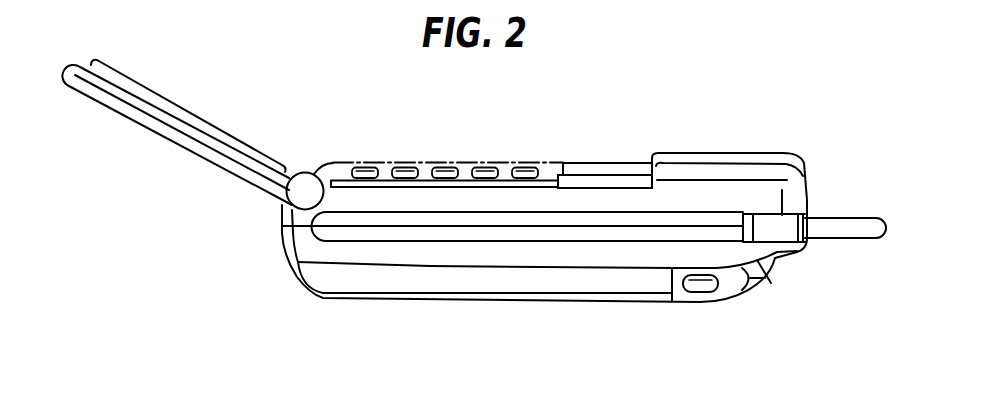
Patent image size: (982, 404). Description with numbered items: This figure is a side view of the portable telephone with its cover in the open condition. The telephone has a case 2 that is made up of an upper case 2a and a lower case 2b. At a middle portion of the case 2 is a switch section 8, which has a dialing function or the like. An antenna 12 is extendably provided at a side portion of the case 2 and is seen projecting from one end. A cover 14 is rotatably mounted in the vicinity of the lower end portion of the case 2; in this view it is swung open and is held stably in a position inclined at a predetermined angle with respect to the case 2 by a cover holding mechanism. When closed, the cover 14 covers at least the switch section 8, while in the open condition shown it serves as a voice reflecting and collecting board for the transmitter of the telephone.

The case 2 is at (653, 150).
The upper case 2a is at (602, 167).
The lower case 2b is at (602, 257).
The switch section 8 is at (427, 166).
The antenna 12 is at (847, 225).
The cover 14 is at (187, 112).